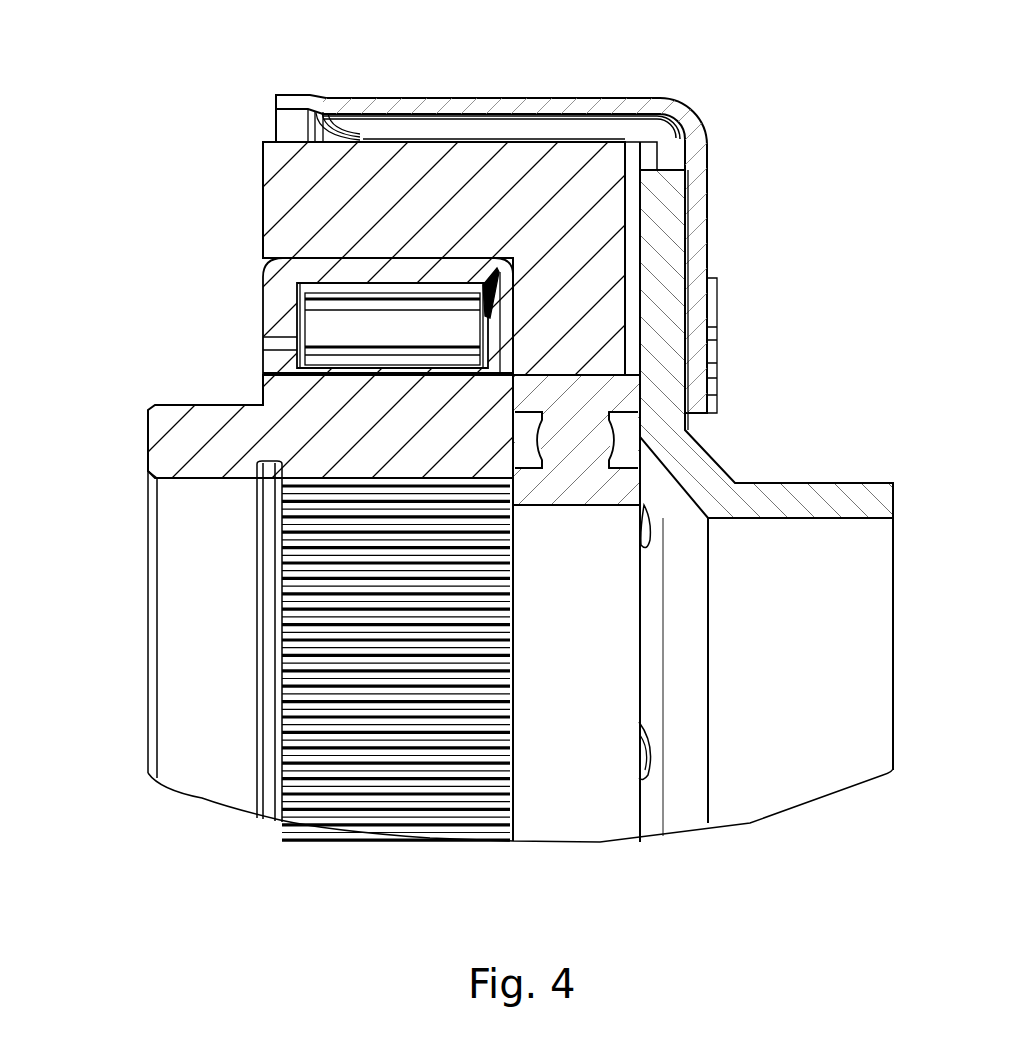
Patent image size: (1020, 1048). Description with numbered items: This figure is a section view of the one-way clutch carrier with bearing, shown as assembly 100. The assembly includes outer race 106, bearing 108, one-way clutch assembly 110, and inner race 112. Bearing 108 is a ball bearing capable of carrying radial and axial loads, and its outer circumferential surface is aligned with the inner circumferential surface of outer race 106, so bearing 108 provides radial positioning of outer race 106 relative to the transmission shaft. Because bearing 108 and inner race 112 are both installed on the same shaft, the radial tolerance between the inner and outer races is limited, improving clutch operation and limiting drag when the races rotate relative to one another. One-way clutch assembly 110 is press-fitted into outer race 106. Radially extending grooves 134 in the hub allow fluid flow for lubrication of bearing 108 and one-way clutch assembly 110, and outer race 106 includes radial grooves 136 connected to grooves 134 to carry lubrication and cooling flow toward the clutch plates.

The assembly 100 is at (746, 84).
The outer race 106 is at (280, 192).
The bearing 108 is at (588, 387).
The one-way clutch assembly 110 is at (280, 292).
The inner race 112 is at (165, 450).
The grooves 134 is at (648, 523).
The radial grooves 136 is at (636, 224).